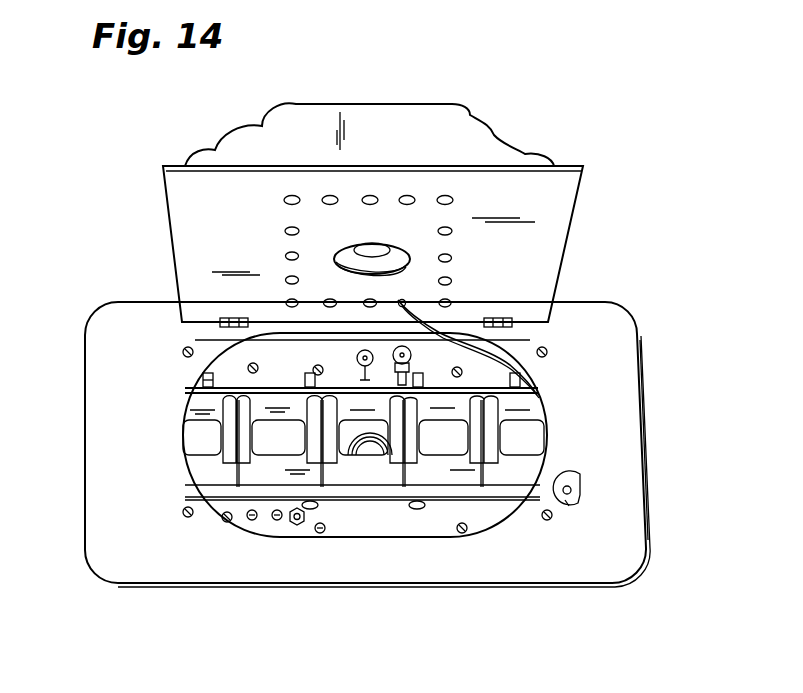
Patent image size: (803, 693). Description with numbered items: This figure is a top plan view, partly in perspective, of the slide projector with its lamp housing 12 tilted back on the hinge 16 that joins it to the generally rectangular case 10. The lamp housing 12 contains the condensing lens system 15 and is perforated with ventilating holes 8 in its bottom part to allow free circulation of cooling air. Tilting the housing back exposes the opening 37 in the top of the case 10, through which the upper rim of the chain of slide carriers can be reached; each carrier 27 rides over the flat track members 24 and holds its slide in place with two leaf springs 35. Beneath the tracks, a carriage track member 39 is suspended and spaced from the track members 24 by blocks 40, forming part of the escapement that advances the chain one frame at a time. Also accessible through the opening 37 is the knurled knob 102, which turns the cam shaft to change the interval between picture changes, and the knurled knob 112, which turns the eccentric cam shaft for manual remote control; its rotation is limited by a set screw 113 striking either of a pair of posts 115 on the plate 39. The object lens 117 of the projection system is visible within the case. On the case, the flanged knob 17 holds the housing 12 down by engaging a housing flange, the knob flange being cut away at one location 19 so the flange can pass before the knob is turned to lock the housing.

The ventilating holes 8 is at (452, 258).
The case 10 is at (648, 399).
The lamp housing 12 is at (490, 138).
The condensing lens system 15 is at (380, 250).
The hinge 16 is at (512, 324).
The flanged knob 17 is at (567, 504).
The cut-away location 19 is at (581, 488).
The flat track members 24 is at (208, 375).
The carrier 27 is at (195, 403).
The leaf springs 35 is at (215, 490).
The opening 37 is at (282, 531).
The carriage track member 39 is at (528, 352).
The blocks 40 is at (210, 355).
The knurled knob 102 is at (356, 356).
The knurled knob 112 is at (412, 362).
The set screw 113 is at (412, 378).
The posts 115 is at (388, 366).
The object lens 117 is at (370, 455).